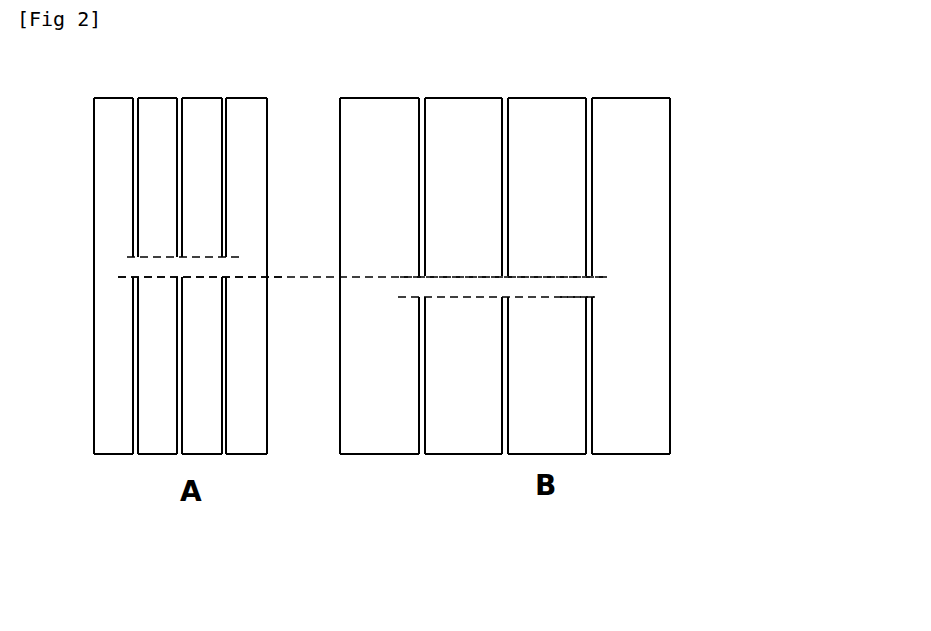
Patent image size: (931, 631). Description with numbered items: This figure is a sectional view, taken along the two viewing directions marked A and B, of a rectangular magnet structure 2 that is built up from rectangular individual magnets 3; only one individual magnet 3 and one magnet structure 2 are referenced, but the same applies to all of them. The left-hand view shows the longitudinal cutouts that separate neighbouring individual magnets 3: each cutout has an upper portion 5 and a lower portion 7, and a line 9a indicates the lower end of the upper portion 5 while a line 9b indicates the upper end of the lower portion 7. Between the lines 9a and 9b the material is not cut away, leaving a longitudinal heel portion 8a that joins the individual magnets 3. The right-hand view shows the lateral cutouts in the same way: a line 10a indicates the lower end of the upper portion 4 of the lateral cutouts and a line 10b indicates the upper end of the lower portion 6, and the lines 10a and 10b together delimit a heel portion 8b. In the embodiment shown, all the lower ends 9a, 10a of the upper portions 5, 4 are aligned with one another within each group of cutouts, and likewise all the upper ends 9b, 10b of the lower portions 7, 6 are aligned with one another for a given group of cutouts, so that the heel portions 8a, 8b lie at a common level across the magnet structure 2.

The magnet structure 2 is at (86, 160).
The individual magnet 3 is at (112, 121).
The upper portion of the lateral cutouts 4 is at (420, 135).
The upper portion of the longitudinal cutouts 5 is at (135, 125).
The lower portion of the lateral cutouts 6 is at (422, 432).
The lower portion of the longitudinal cutouts 7 is at (135, 444).
The longitudinal heel portion 8a is at (137, 266).
The longitudinal heel portion 8b is at (588, 289).
The line indicating the lower end of the upper portion of the longitudinal cutouts 9a is at (127, 258).
The line indicating the upper end of the lower portion of the longitudinal cutouts 9b is at (120, 277).
The line indicating the lower end of the upper portion of the lateral cutouts 10a is at (607, 276).
The line indicating the upper end of the lower portion of the lateral cutouts 10b is at (605, 297).